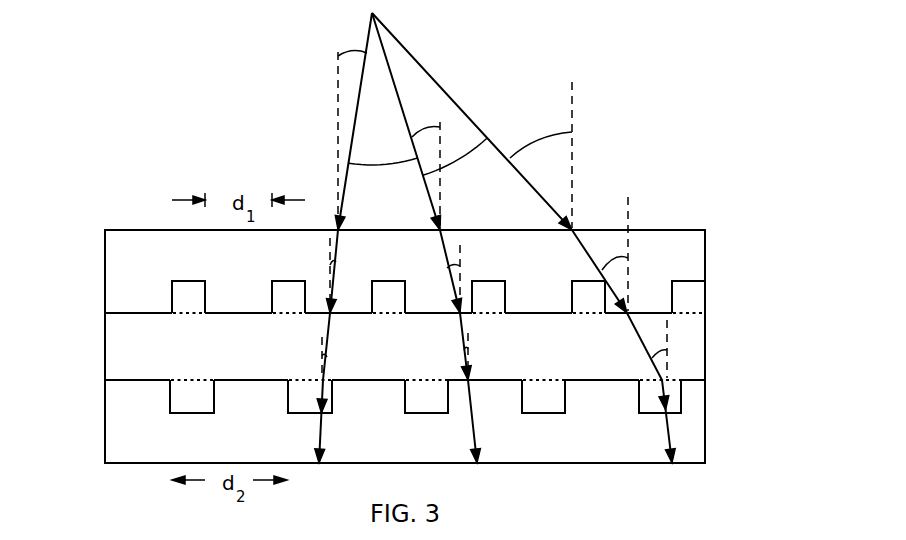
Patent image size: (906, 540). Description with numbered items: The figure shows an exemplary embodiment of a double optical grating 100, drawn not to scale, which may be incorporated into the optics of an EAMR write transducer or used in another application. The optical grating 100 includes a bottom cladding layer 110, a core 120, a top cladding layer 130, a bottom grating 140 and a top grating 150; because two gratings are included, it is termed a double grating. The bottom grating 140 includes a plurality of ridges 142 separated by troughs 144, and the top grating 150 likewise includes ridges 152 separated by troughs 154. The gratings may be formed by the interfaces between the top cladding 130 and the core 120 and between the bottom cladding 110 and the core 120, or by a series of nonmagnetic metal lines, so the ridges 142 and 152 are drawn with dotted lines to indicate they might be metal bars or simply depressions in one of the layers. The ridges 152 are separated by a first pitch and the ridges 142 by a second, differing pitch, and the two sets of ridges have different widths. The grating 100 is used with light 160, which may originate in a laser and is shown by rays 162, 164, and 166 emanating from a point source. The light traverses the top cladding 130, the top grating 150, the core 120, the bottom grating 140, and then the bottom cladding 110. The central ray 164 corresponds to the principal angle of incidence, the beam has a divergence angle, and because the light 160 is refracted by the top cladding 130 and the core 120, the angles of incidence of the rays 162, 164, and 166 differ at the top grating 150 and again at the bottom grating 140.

The double optical grating 100 is at (147, 42).
The bottom cladding layer 110 is at (705, 445).
The core 120 is at (705, 370).
The top cladding layer 130 is at (638, 230).
The bottom grating 140 is at (377, 439).
The ridges 142 is at (425, 434).
The troughs 144 is at (592, 430).
The top grating 150 is at (410, 295).
The ridges 152 is at (150, 296).
The troughs 154 is at (658, 296).
The light 160 is at (456, 238).
The ray 162 is at (395, 80).
The central ray 164 is at (472, 115).
The ray 166 is at (355, 128).